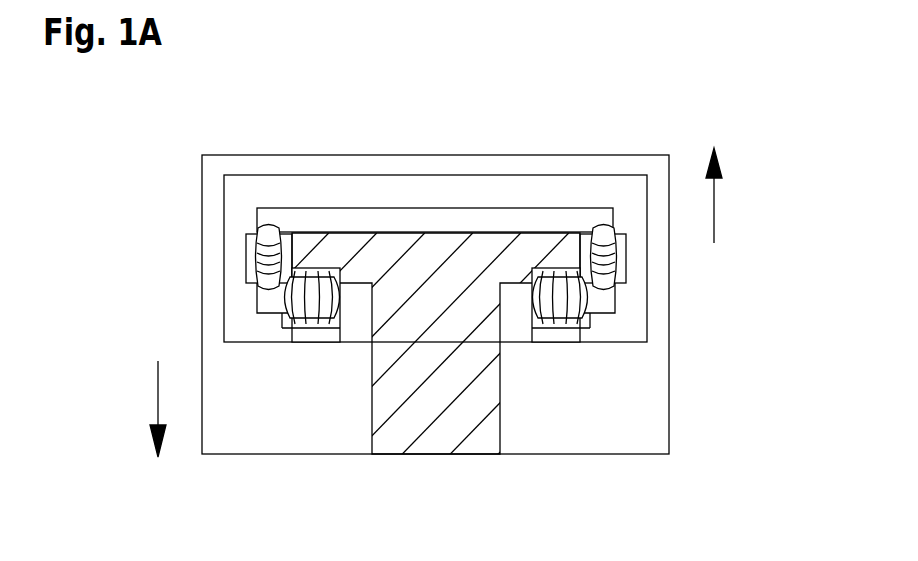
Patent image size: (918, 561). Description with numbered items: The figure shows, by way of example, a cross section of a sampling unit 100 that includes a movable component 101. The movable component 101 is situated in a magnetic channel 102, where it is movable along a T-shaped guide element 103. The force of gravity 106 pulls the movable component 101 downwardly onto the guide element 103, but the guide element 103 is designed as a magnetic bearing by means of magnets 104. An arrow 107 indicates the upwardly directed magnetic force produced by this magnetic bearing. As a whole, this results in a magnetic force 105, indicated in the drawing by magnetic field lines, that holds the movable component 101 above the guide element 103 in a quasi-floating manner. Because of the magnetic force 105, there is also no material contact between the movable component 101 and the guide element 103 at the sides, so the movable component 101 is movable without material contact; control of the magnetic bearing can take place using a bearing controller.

The sampling unit 100 is at (433, 305).
The movable component 101 is at (438, 208).
The magnetic channel 102 is at (214, 192).
The T-shaped guide element 103 is at (426, 420).
The magnets 104 is at (248, 233).
The magnetic force 105 is at (268, 224).
The force of gravity 106 is at (158, 400).
The arrow indicating upwardly directed magnetic force 107 is at (714, 207).